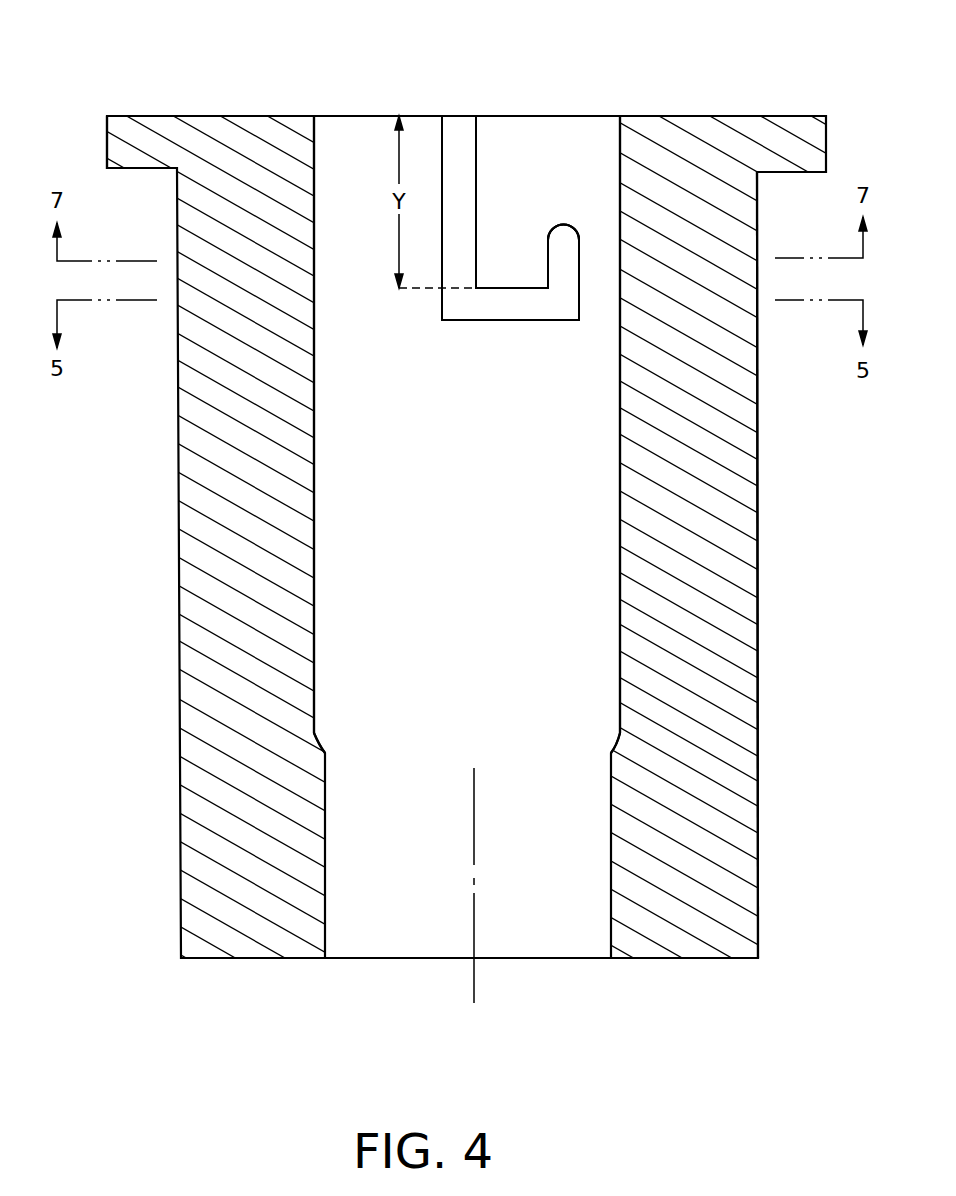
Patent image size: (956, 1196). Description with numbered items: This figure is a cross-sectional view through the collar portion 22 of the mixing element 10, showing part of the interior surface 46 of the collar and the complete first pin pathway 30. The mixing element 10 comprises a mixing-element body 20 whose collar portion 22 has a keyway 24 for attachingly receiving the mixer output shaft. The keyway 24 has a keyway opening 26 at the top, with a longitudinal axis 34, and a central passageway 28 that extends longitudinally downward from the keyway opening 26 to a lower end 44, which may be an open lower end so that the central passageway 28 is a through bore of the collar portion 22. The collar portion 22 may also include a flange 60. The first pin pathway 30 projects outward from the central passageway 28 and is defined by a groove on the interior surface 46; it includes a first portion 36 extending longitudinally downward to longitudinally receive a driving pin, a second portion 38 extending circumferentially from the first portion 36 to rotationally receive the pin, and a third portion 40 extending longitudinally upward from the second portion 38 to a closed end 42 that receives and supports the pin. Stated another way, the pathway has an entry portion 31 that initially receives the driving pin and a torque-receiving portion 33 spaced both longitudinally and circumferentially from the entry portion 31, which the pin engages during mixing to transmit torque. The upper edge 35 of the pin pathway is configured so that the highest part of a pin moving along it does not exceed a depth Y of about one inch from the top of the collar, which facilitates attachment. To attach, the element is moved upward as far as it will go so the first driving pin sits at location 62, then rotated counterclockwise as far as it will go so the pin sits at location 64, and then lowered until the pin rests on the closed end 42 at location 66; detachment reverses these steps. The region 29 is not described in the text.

The mixing element 10 is at (434, 535).
The mixing-element body 20 is at (177, 583).
The collar portion 22 is at (757, 450).
The keyway 24 is at (370, 152).
The keyway opening 26 is at (325, 116).
The central passageway 28 is at (535, 138).
The top surface 29 is at (580, 126).
The first pin pathway 30 is at (502, 218).
The entry portion 31 is at (446, 116).
The torque-receiving portion 33 is at (573, 234).
The longitudinal axis 34 is at (476, 990).
The upper edge 35 is at (514, 287).
The first portion 36 is at (462, 212).
The second portion 38 is at (511, 302).
The third portion 40 is at (566, 257).
The closed end 42 is at (561, 228).
The lower end 44 is at (352, 958).
The interior surface 46 is at (317, 625).
The flange 60 is at (107, 142).
The location 62 is at (455, 302).
The location 64 is at (568, 308).
The location 66 is at (561, 248).